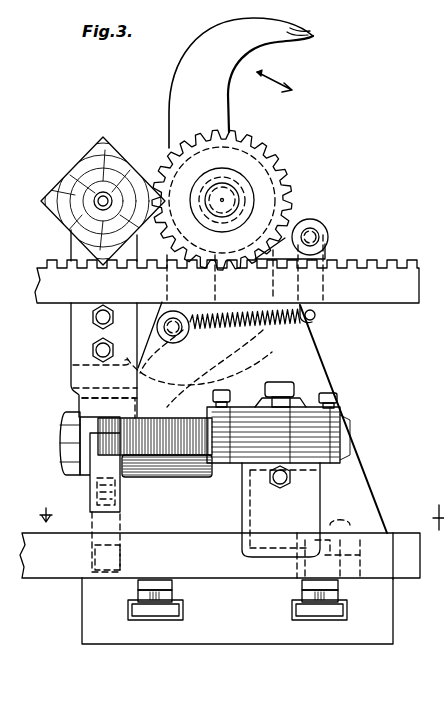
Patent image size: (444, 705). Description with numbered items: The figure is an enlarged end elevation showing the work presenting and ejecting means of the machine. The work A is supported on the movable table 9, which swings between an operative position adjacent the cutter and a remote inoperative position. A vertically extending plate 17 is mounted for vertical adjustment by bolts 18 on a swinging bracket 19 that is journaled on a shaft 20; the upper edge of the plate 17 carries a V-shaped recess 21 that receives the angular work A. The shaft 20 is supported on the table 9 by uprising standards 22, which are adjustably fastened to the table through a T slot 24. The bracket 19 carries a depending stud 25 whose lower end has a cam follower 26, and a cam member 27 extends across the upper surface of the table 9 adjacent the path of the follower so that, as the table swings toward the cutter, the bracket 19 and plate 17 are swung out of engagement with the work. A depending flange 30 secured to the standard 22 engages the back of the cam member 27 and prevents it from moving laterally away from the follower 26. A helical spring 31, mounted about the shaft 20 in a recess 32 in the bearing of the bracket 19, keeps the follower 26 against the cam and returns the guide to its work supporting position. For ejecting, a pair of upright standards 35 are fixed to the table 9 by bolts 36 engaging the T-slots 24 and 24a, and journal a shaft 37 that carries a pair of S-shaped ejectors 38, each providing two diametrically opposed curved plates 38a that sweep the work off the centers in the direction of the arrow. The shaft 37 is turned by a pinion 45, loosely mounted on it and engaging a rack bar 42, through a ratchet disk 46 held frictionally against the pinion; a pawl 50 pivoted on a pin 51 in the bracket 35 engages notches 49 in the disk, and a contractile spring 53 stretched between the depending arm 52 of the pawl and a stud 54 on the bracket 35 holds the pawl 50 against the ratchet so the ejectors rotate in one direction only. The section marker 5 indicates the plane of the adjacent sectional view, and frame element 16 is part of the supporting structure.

The section line 5 is at (241, 510).
The movable table 9 is at (372, 610).
The bracket frame 16 is at (64, 391).
The vertically extending plate 17 is at (80, 318).
The bolts 18 is at (94, 347).
The swinging bracket 19 is at (92, 403).
The shaft 20 is at (278, 442).
The recess 21 is at (85, 241).
The uprising standards 22 is at (246, 515).
The T slot 24 is at (320, 620).
The T-slot 24a is at (157, 620).
The depending stud 25 is at (120, 497).
The cam follower 26 is at (125, 557).
The cam member 27 is at (400, 531).
The depending flange 30 is at (300, 510).
The helical spring 31 is at (170, 462).
The recess 32 is at (223, 368).
The upright standards 35 is at (312, 357).
The bolts 36 is at (350, 563).
The shaft 37 is at (224, 198).
The ejectors 38 is at (220, 118).
The plates 38a is at (313, 37).
The rack bar 42 is at (374, 262).
The pinion 45 is at (280, 147).
The ratchet disk 46 is at (287, 188).
The notches 49 is at (186, 140).
The pawl 50 is at (285, 238).
The pin 51 is at (322, 225).
The depending arm 52 is at (318, 313).
The contractile spring 53 is at (240, 327).
The stud 54 is at (173, 343).
The work A is at (88, 158).